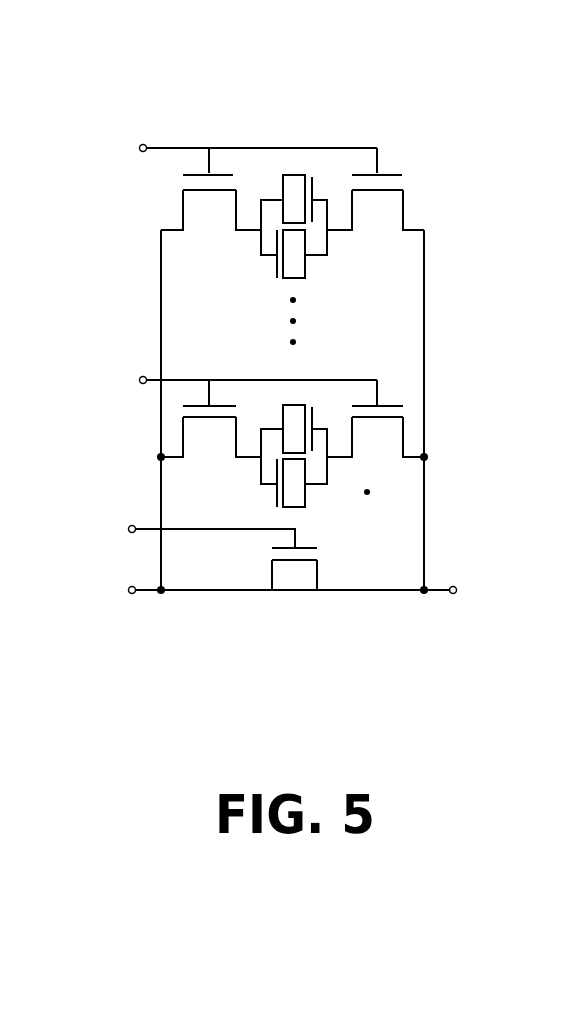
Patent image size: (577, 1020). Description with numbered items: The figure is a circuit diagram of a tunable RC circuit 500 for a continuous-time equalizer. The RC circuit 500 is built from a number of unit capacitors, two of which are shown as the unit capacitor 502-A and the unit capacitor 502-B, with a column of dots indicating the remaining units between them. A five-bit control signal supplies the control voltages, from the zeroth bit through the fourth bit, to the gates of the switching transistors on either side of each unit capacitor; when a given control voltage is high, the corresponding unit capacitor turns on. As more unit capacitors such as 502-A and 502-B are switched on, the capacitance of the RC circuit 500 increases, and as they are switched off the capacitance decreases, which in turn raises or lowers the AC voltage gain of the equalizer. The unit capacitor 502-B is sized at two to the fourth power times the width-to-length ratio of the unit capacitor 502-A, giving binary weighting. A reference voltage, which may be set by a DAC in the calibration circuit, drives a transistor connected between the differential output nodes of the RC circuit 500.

The RC circuit 500 is at (224, 697).
The unit capacitor 502-A is at (300, 162).
The unit capacitor 502-B is at (305, 400).